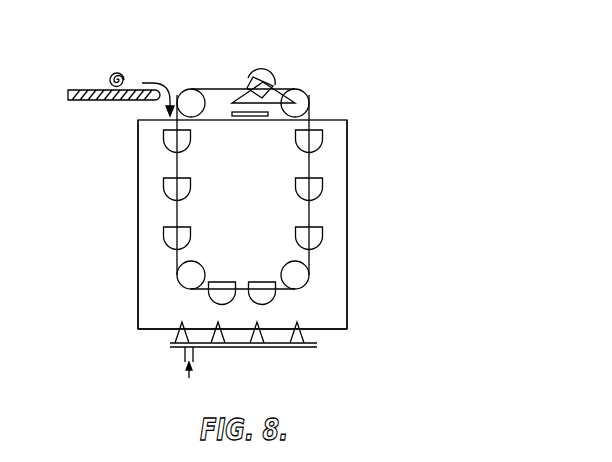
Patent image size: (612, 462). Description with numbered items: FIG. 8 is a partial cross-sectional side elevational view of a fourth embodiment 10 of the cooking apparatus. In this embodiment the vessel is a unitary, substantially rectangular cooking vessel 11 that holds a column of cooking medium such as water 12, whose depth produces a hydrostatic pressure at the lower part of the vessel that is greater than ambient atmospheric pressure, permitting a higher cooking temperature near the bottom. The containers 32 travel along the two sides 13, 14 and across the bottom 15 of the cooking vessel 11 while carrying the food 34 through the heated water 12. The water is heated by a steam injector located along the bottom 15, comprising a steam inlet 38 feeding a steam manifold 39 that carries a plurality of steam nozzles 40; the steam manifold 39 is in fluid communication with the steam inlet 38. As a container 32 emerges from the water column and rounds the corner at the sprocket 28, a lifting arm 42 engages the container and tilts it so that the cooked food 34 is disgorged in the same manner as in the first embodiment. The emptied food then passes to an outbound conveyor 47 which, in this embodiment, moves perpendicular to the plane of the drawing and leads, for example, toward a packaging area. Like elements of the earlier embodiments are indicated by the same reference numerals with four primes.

The apparatus embodiment 10 is at (382, 212).
The cooking vessel 11 is at (337, 311).
The water 12 is at (263, 230).
The first side 13 is at (142, 222).
The second side 14 is at (343, 206).
The bottom 15 is at (160, 326).
The sprocket 28 is at (310, 93).
The containers 32 is at (316, 137).
The food 34 is at (117, 73).
The steam inlet 38 is at (187, 379).
The steam manifold 39 is at (248, 347).
The steam nozzles 40 is at (296, 327).
The lifting arm 42 is at (273, 91).
The outbound conveyor 47 is at (233, 113).